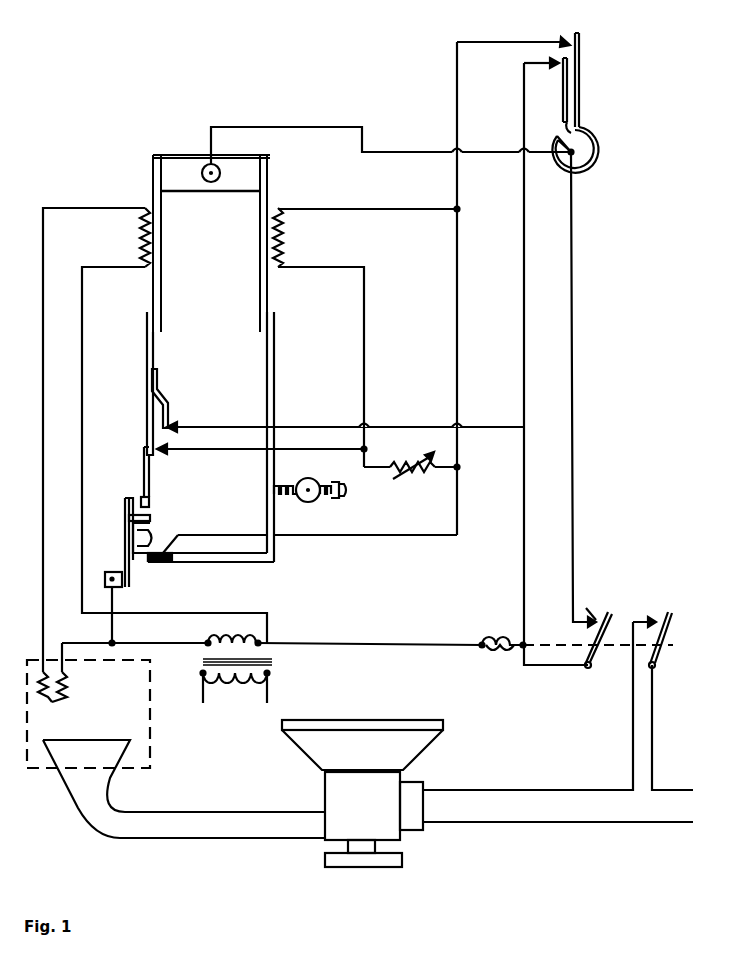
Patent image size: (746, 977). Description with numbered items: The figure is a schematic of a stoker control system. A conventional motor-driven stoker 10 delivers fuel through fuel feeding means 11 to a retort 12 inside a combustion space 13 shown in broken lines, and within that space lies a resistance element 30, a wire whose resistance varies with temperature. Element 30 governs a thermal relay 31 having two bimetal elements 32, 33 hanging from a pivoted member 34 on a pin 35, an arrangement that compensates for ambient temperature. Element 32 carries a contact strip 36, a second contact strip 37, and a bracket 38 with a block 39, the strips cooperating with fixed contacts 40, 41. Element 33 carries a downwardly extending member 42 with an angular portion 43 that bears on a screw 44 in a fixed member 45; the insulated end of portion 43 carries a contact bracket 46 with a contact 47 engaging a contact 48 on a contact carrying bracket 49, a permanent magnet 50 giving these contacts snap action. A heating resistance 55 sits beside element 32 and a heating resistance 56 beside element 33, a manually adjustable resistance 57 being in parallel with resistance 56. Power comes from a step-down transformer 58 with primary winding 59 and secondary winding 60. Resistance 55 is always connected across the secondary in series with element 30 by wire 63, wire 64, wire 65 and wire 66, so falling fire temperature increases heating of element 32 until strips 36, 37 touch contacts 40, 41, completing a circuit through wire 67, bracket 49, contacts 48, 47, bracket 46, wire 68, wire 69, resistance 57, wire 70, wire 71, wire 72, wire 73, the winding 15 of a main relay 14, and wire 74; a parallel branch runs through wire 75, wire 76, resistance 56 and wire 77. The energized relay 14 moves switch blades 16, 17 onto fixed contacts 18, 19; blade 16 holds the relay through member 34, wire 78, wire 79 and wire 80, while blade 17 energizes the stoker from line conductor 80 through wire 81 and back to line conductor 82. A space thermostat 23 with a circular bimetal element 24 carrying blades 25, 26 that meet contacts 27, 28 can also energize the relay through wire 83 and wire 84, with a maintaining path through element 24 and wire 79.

The stoker 10 is at (369, 813).
The fuel feeding means 11 is at (234, 812).
The retort 12 is at (80, 742).
The combustion space 13 is at (150, 732).
The main relay 14 is at (498, 635).
The winding 15 is at (500, 655).
The switch blade 16 is at (612, 620).
The switch blade 17 is at (671, 620).
The fixed electrical contact 18 is at (600, 616).
The fixed electrical contact 19 is at (654, 617).
The space thermostat 23 is at (586, 103).
The circular bimetal element 24 is at (596, 150).
The movable switch blade 25 is at (563, 92).
The movable switch blade 26 is at (580, 64).
The fixed electrical contact 27 is at (552, 58).
The fixed electrical contact 28 is at (570, 38).
The resistance element 30 is at (66, 683).
The thermal relay 31 is at (176, 120).
The bimetal element 32 is at (161, 258).
The bimetal element 33 is at (260, 256).
The pivoted member 34 is at (236, 155).
The pin 35 is at (208, 183).
The contact strip 36 is at (147, 427).
The contact strip 37 is at (165, 410).
The bracket 38 is at (150, 477).
The block 39 is at (150, 499).
The fixed electrical contact 40 is at (172, 447).
The fixed electrical contact 41 is at (178, 423).
The downwardly extending member 42 is at (274, 398).
The angular portion 43 is at (210, 562).
The screw 44 is at (340, 499).
The fixed member 45 is at (306, 502).
The contact bracket 46 is at (151, 529).
The contact 47 is at (150, 518).
The contact 48 is at (130, 502).
The contact carrying bracket 49 is at (128, 541).
The permanent magnet 50 is at (140, 562).
The heating resistance 55 is at (139, 237).
The heating resistance 56 is at (284, 237).
The manually adjustable resistance 57 is at (408, 455).
The step-down transformer 58 is at (234, 693).
The primary winding 59 is at (254, 674).
The secondary winding 60 is at (244, 638).
The wire 63 is at (173, 613).
The wire 64 is at (43, 521).
The wire 65 is at (70, 643).
The wire 66 is at (151, 643).
The wire 67 is at (112, 606).
The wire 68 is at (355, 538).
The wire 69 is at (438, 468).
The wire 70 is at (364, 467).
The wire 71 is at (256, 455).
The wire 72 is at (312, 427).
The wire 73 is at (524, 522).
The wire 74 is at (382, 643).
The wire 75 is at (457, 308).
The wire 76 is at (382, 209).
The wire 77 is at (364, 336).
The wire 78 is at (376, 152).
The wire 79 is at (573, 344).
The wire 80 is at (562, 668).
The wire 81 is at (574, 790).
The line conductor 82 is at (668, 822).
The wire 83 is at (457, 80).
The wire 84 is at (524, 302).